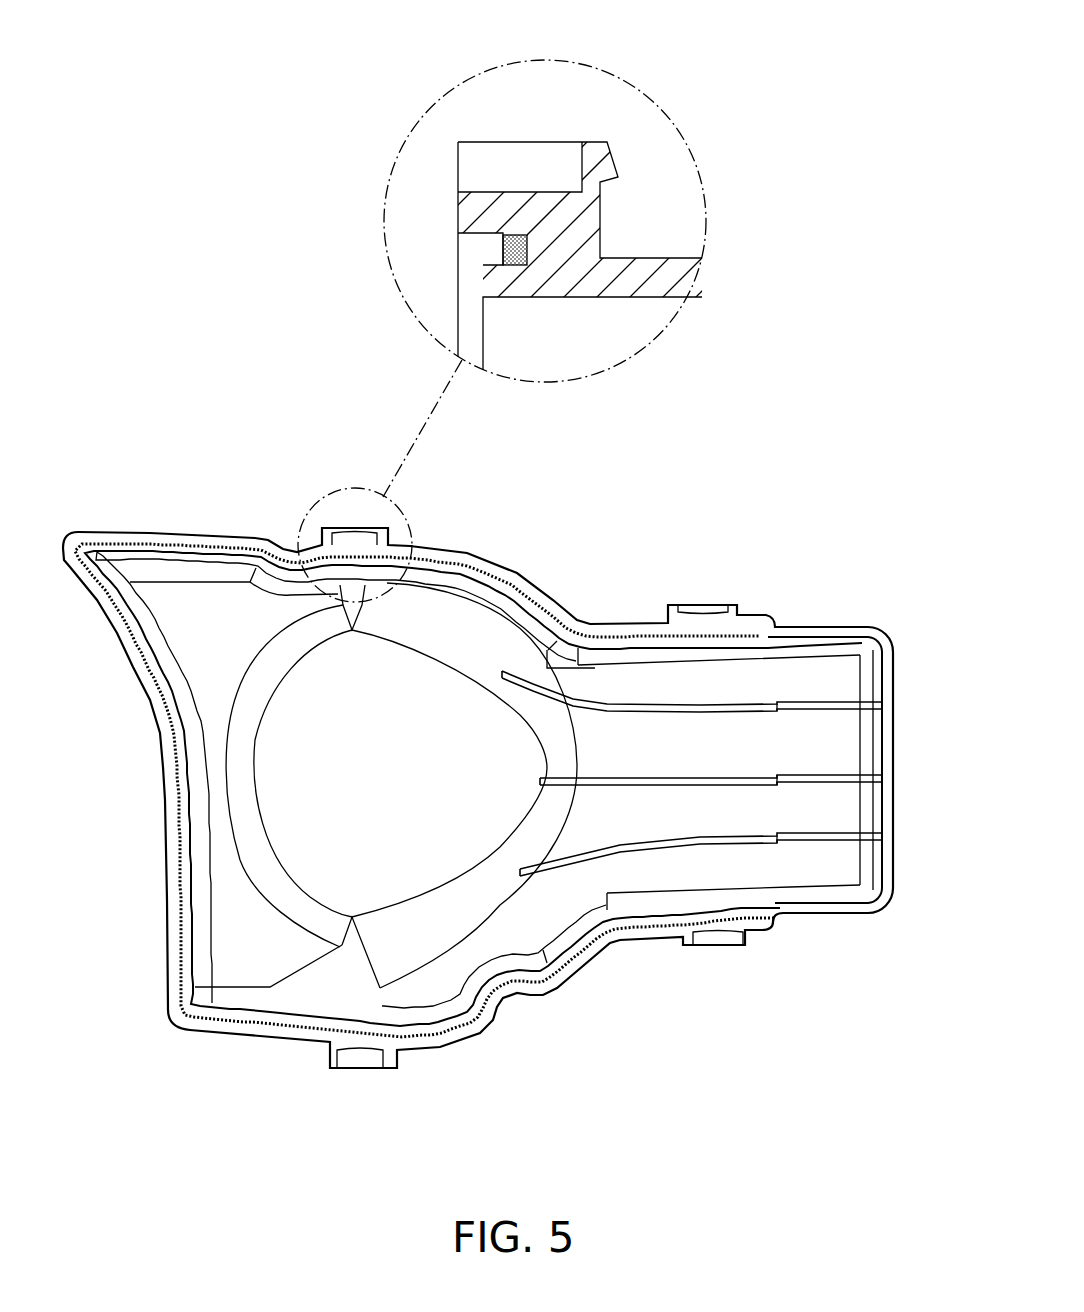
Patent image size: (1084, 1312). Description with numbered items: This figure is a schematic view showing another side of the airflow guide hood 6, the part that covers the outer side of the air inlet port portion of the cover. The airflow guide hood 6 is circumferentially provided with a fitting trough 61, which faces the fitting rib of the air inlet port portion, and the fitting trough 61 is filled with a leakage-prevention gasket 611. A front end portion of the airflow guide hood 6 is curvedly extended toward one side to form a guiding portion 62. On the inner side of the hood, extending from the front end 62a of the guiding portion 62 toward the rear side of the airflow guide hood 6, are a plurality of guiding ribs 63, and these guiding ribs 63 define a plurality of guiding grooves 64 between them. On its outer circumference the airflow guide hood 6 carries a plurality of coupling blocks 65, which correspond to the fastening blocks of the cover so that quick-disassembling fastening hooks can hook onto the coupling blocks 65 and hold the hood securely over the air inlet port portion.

The airflow guide hood 6 is at (171, 503).
The fitting trough 61 is at (492, 572).
The leakage-prevention gasket 611 is at (533, 597).
The guiding portion 62 is at (660, 932).
The front end of the guiding portion 62a is at (868, 633).
The guiding rib 63 is at (790, 703).
The guiding groove 64 is at (845, 678).
The coupling block 65 is at (352, 535).